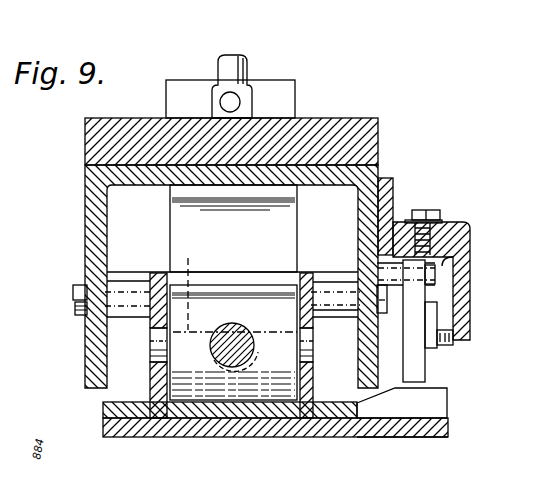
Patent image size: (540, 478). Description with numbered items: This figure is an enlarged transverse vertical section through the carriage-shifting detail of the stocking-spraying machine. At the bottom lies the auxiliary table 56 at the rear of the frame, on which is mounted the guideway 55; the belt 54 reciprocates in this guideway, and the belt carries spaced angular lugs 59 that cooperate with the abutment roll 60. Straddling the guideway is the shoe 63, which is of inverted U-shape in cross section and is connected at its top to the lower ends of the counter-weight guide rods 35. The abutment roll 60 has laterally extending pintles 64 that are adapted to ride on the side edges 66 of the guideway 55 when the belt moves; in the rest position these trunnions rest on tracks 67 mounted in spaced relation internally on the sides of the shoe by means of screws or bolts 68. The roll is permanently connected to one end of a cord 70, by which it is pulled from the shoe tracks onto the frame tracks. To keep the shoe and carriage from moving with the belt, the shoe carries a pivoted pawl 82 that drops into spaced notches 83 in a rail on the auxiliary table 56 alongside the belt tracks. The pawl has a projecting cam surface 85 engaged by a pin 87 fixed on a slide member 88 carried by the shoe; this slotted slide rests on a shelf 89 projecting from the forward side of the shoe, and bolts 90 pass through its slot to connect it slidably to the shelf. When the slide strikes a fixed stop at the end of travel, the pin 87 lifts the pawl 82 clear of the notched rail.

The counter-weight guide rods 35 is at (248, 73).
The shoe 63 is at (372, 174).
The bolts 90 is at (429, 211).
The slide member 88 is at (468, 259).
The shelf 89 is at (453, 274).
The pivoted pawl 82 is at (420, 376).
The cam surface 85 is at (437, 313).
The pin 87 is at (450, 344).
The notches 83 is at (437, 409).
The belt 54 is at (275, 444).
The auxiliary table 56 is at (395, 433).
The abutment roll 60 is at (168, 437).
The angular lugs 59 is at (172, 252).
The screws or bolts 68 is at (73, 293).
The shoe tracks 67 is at (152, 275).
The pintles 64 is at (152, 341).
The side edges 66 is at (148, 358).
The guideway 55 is at (313, 383).
The cord 70 is at (233, 324).